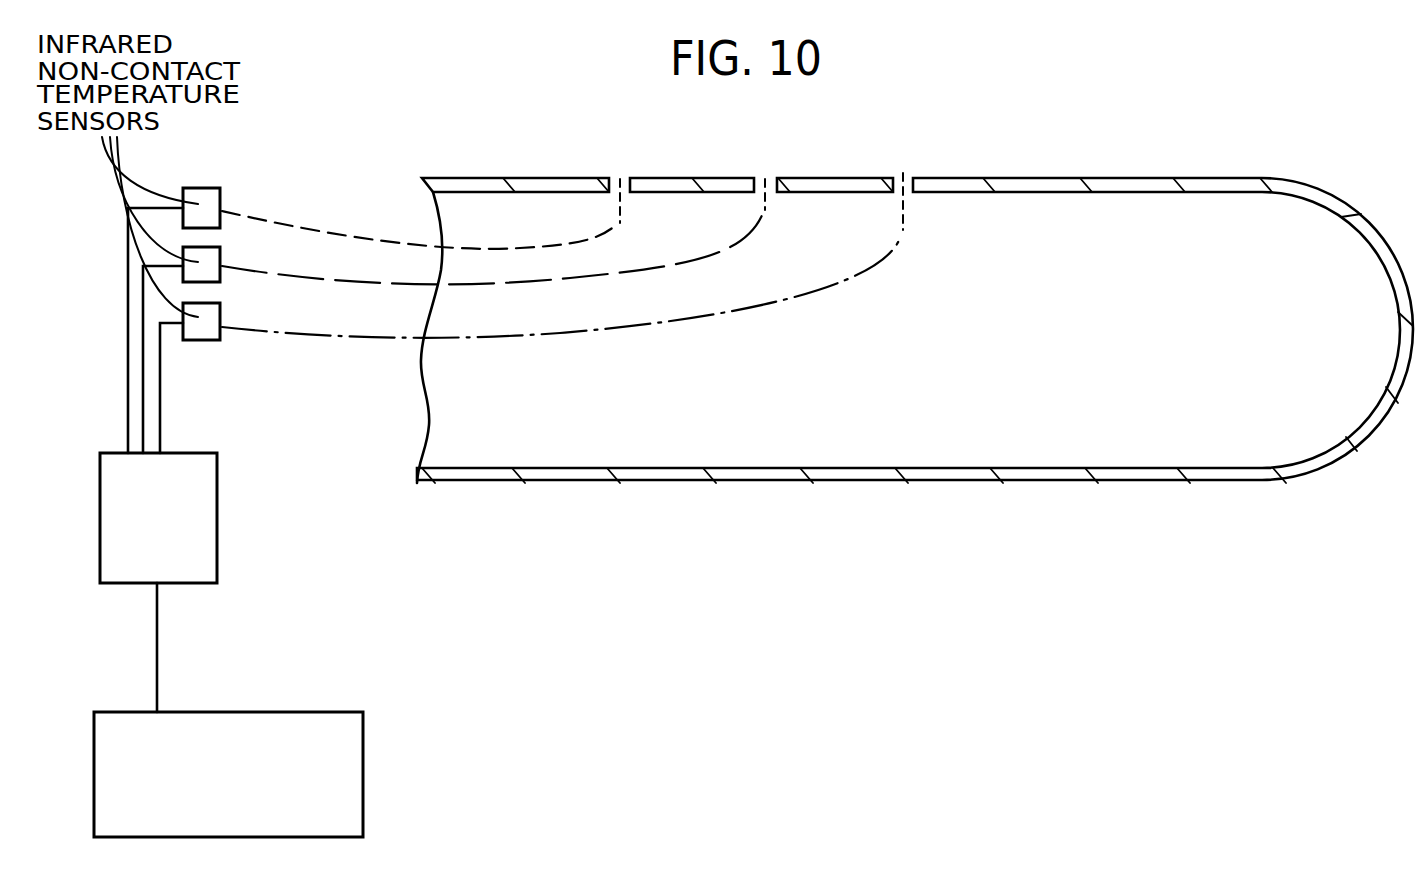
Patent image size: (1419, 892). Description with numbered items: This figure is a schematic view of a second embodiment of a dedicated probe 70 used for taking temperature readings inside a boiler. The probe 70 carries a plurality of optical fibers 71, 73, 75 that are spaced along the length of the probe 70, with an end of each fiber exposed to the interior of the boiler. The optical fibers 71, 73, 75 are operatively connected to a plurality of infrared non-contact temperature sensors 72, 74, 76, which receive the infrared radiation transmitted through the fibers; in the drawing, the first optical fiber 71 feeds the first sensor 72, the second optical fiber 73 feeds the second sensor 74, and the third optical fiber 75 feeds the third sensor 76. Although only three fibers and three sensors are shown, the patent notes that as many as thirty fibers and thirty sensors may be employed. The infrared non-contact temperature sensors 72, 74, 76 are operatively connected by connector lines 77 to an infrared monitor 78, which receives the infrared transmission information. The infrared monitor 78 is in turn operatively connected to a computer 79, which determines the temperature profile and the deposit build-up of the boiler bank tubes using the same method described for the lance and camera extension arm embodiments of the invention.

The dedicated probe 70 is at (837, 483).
The optical fiber 71 is at (543, 243).
The infrared non-contact temperature sensor 72 is at (210, 201).
The optical fiber 73 is at (725, 248).
The infrared non-contact temperature sensor 74 is at (205, 255).
The optical fiber 75 is at (840, 283).
The infrared non-contact temperature sensor 76 is at (205, 313).
The connector lines 77 is at (127, 340).
The infrared monitor 78 is at (195, 508).
The computer 79 is at (340, 775).